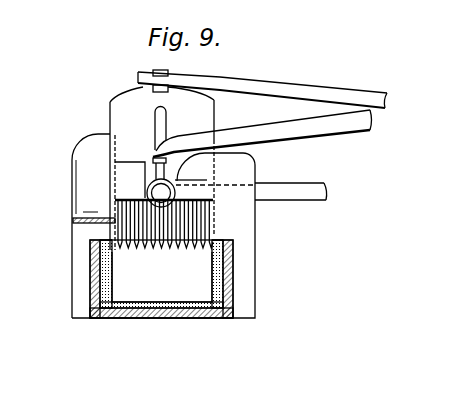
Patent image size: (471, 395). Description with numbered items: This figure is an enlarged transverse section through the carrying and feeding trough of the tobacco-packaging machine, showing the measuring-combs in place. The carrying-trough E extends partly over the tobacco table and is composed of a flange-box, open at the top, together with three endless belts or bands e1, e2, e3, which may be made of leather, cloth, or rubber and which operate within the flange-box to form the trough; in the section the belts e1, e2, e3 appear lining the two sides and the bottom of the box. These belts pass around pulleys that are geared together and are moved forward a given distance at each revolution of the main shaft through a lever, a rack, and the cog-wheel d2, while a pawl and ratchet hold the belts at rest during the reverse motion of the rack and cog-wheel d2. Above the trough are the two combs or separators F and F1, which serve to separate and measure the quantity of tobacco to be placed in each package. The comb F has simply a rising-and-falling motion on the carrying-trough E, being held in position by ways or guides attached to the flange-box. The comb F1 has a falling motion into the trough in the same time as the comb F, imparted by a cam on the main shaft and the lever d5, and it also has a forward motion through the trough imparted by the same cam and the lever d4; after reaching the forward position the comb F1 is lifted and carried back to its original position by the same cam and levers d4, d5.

The comb or separator F is at (147, 191).
The comb or separator F1 is at (174, 127).
The cog-wheel d2 is at (291, 183).
The lever d4 is at (304, 81).
The lever d5 is at (262, 133).
The carrying-trough E is at (176, 310).
The endless belt or band e1 is at (111, 271).
The endless belt or band e2 is at (161, 280).
The endless belt or band e3 is at (214, 271).